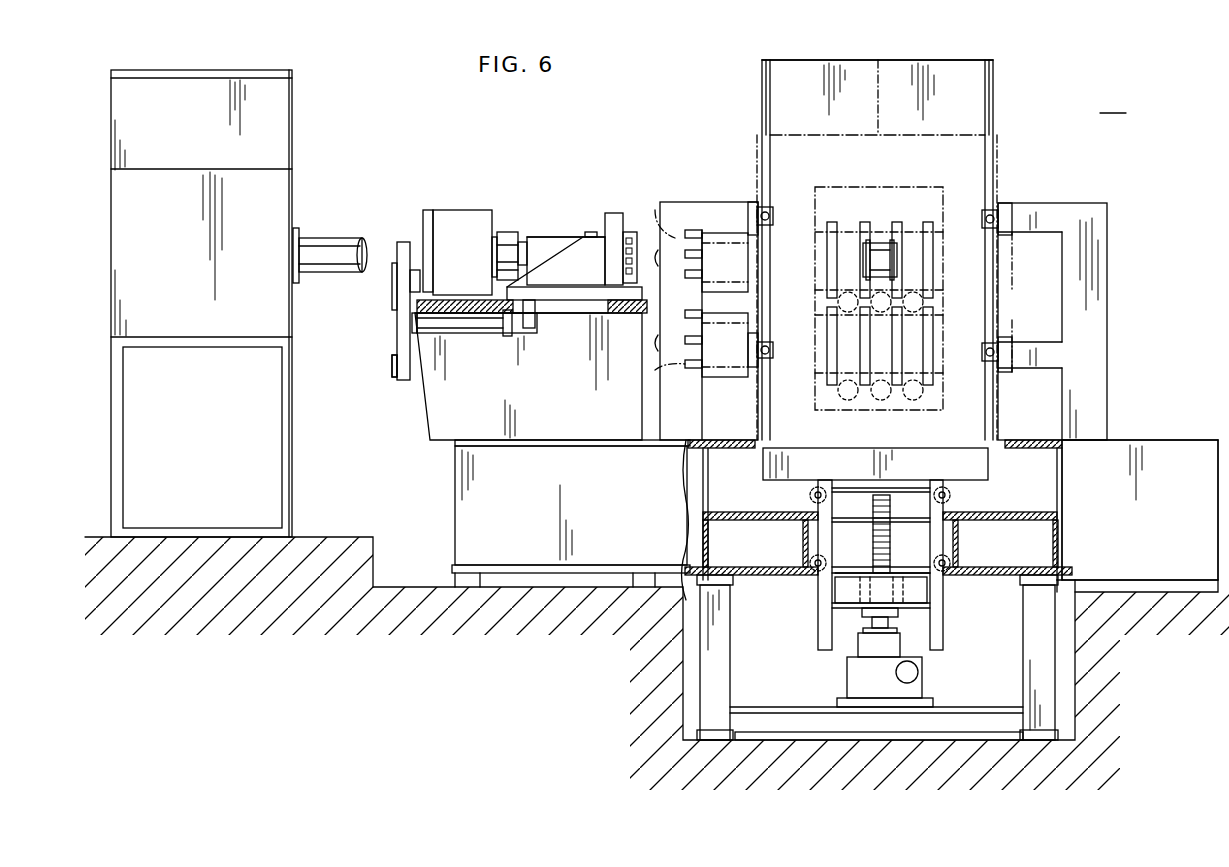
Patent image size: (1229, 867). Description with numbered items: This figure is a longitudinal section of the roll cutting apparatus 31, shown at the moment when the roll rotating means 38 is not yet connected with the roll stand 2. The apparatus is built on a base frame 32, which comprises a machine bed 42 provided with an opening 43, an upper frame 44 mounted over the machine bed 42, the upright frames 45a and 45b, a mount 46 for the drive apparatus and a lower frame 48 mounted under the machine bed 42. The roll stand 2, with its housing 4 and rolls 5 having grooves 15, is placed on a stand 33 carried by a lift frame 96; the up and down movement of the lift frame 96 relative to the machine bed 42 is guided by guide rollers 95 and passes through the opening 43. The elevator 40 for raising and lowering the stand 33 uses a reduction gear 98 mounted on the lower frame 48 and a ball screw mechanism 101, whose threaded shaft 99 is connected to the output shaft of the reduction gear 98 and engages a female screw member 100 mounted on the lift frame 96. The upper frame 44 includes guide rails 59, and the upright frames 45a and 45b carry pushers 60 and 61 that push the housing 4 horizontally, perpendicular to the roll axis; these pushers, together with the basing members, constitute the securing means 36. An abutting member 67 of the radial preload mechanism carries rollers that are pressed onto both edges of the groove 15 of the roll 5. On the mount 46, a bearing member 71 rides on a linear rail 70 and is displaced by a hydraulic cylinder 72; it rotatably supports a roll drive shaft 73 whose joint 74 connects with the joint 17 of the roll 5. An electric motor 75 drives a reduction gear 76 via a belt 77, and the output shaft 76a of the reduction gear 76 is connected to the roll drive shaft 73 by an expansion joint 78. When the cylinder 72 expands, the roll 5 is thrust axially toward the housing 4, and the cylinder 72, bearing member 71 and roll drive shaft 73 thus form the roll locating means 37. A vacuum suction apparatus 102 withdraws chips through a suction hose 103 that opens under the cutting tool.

The roll stand 2 is at (998, 132).
The housing 4 is at (879, 67).
The rolls 5 is at (914, 228).
The groove 15 is at (880, 226).
The joint 17 is at (654, 216).
The roll cutting apparatus 31 is at (1091, 144).
The base frame 32 is at (1138, 418).
The stand 33 is at (988, 472).
The securing means 36 is at (1000, 196).
The roll locating means 37 is at (532, 356).
The roll rotating means 38 is at (445, 195).
The elevator 40 is at (796, 626).
The machine bed 42 is at (1174, 440).
The opening 43 is at (1002, 440).
The upper frame 44 is at (960, 60).
The upright frame 45a is at (1107, 248).
The upright frame 45b is at (698, 200).
The mount 46 is at (432, 384).
The lower frame 48 is at (714, 646).
The guide rails 59 is at (762, 108).
The pusher 60 is at (1002, 216).
The pusher 61 is at (757, 208).
The abutting member 67 is at (863, 243).
The linear rail 70 is at (482, 318).
The bearing member 71 is at (564, 251).
The hydraulic cylinder 72 is at (502, 328).
The roll drive shaft 73 is at (575, 242).
The joint 74 is at (623, 216).
The electric motor 75 is at (400, 380).
The reduction gear 76 is at (466, 212).
The output shaft 76a is at (522, 232).
The belt 77 is at (402, 320).
The expansion joint 78 is at (545, 237).
The guide rollers 95 is at (807, 496).
The lift frame 96 is at (940, 540).
The reduction gear 98 is at (920, 673).
The threaded shaft 99 is at (891, 544).
The female screw member 100 is at (898, 590).
The ball screw mechanism 101 is at (862, 568).
The vacuum suction apparatus 102 is at (297, 116).
The suction hose 103 is at (330, 236).